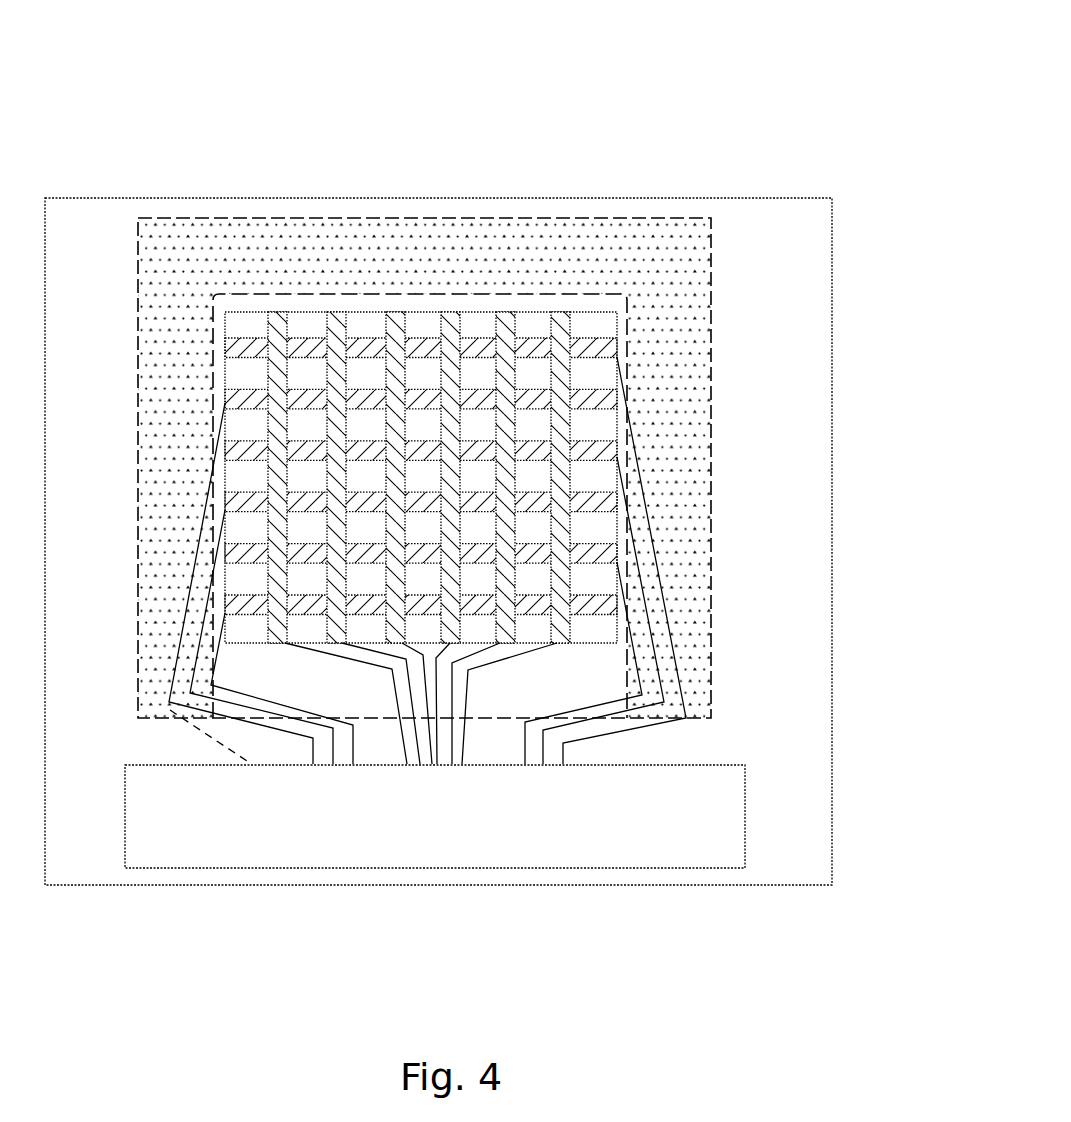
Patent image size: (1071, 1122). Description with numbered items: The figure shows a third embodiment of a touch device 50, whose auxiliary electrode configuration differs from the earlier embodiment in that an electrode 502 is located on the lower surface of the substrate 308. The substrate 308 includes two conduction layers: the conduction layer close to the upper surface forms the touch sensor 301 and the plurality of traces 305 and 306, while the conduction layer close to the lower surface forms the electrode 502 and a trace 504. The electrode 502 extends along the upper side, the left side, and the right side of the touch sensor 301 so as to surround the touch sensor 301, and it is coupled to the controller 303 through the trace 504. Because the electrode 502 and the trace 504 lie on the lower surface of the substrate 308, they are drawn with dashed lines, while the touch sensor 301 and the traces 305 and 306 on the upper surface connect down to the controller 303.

The touch device 50 is at (777, 109).
The touch sensor 301 is at (533, 313).
The electrode 502 is at (700, 315).
The substrate 308 is at (832, 508).
The trace 504 is at (210, 737).
The trace 306 is at (430, 765).
The traces 305 is at (553, 765).
The controller 303 is at (727, 823).